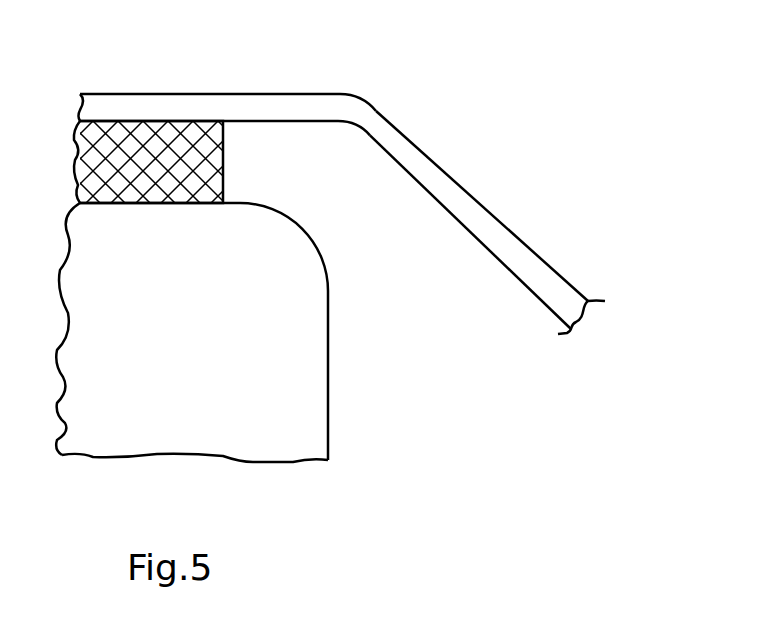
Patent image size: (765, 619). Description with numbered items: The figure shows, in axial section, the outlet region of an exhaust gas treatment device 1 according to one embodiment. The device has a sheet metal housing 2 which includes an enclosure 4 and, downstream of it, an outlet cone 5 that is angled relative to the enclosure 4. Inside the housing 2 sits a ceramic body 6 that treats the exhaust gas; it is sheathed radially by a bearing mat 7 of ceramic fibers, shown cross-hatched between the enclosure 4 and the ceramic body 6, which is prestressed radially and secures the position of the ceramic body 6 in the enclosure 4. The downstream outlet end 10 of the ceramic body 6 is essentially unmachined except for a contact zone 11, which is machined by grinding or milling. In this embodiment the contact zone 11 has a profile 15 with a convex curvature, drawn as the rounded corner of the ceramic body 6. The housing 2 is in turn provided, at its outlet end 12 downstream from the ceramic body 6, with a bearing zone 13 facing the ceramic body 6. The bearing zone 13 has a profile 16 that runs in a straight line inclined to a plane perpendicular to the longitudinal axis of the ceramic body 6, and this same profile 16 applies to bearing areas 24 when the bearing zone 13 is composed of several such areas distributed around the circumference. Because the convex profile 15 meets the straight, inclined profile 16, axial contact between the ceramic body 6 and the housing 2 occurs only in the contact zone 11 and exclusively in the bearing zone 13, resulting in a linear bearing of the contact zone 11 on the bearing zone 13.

The exhaust gas treatment device 1 is at (530, 147).
The housing 2 is at (118, 105).
The enclosure 4 is at (188, 112).
The outlet cone 5 is at (509, 235).
The ceramic body 6 is at (267, 320).
The bearing mat 7 is at (118, 193).
The outlet end 10 is at (328, 393).
The contact zone 11 is at (314, 252).
The outlet end 12 is at (545, 311).
The bearing zone 13 is at (431, 193).
The profile 15 is at (293, 218).
The profile 16 is at (418, 181).
The bearing areas 24 is at (456, 222).